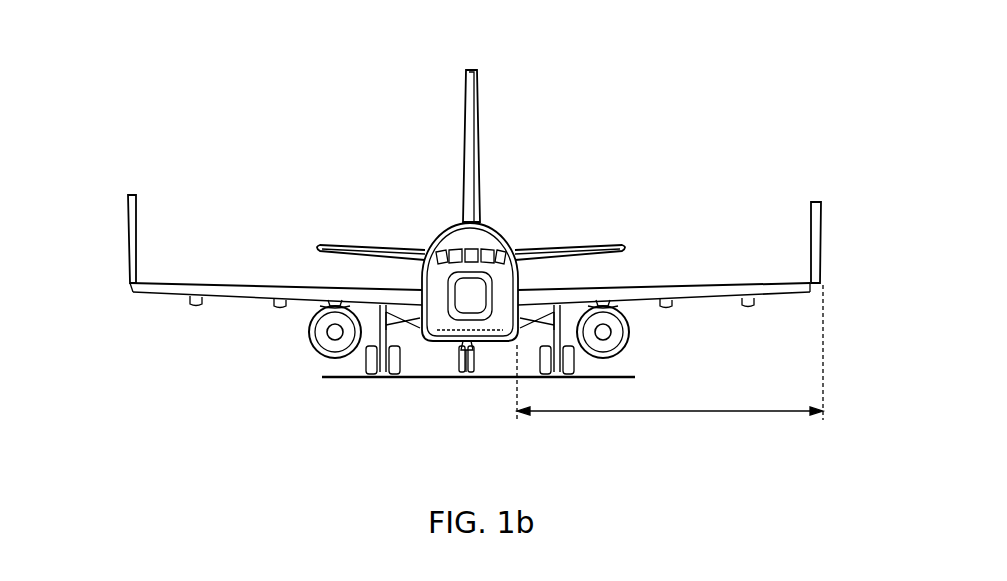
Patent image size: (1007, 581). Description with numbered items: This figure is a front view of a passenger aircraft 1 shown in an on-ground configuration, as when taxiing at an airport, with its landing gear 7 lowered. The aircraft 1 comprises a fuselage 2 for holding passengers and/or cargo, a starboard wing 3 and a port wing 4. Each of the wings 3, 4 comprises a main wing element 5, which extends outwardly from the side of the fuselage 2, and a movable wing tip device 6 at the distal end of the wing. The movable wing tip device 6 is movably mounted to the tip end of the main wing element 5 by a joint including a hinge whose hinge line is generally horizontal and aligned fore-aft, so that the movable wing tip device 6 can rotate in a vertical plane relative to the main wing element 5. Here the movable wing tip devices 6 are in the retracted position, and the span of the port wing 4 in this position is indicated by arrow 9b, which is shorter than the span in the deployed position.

The passenger aircraft 1 is at (240, 62).
The fuselage 2 is at (490, 226).
The starboard wing 3 is at (268, 285).
The port wing 4 is at (672, 283).
The main wing element 5 is at (255, 295).
The movable wing tip device 6 is at (128, 250).
The landing gear 7 is at (476, 378).
The arrow 9b is at (690, 412).